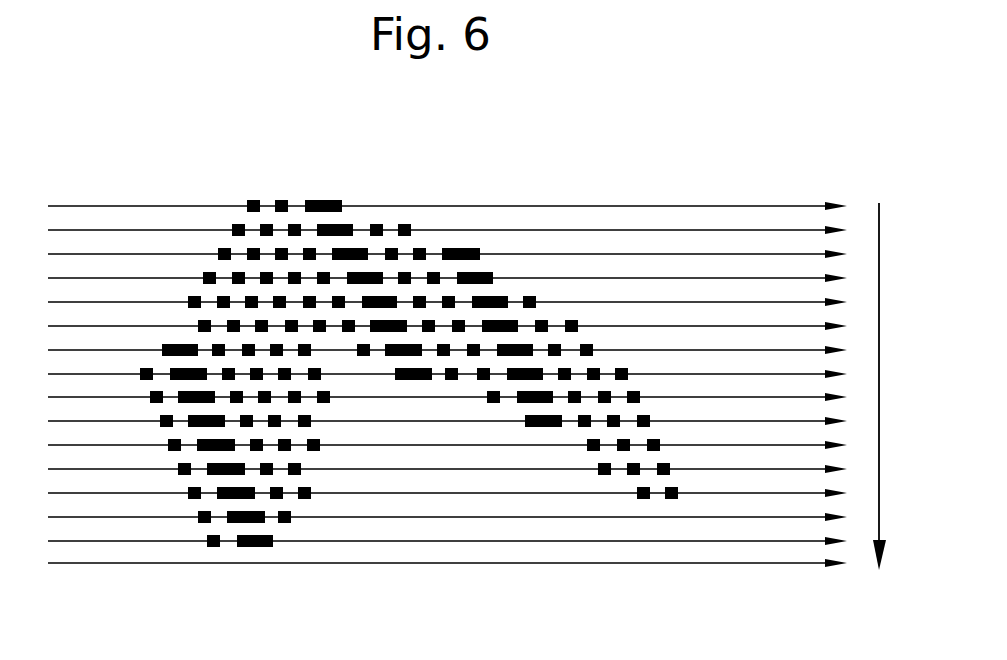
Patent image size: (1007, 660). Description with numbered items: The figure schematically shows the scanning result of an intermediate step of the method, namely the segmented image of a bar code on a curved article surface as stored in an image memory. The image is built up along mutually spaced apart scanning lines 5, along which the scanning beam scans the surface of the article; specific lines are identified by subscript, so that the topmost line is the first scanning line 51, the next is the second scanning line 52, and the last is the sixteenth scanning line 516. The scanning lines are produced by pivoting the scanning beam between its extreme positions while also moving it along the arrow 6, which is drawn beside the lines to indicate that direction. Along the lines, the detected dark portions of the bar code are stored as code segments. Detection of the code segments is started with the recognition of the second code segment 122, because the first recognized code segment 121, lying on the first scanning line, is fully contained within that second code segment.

The scanning lines 5 is at (447, 380).
The first scanning line 51 is at (670, 205).
The second scanning line 52 is at (732, 228).
The sixteenth scanning line 516 is at (713, 563).
The first recognized code segment 121 is at (247, 193).
The second code segment 122 is at (232, 222).
The arrow 6 is at (883, 296).